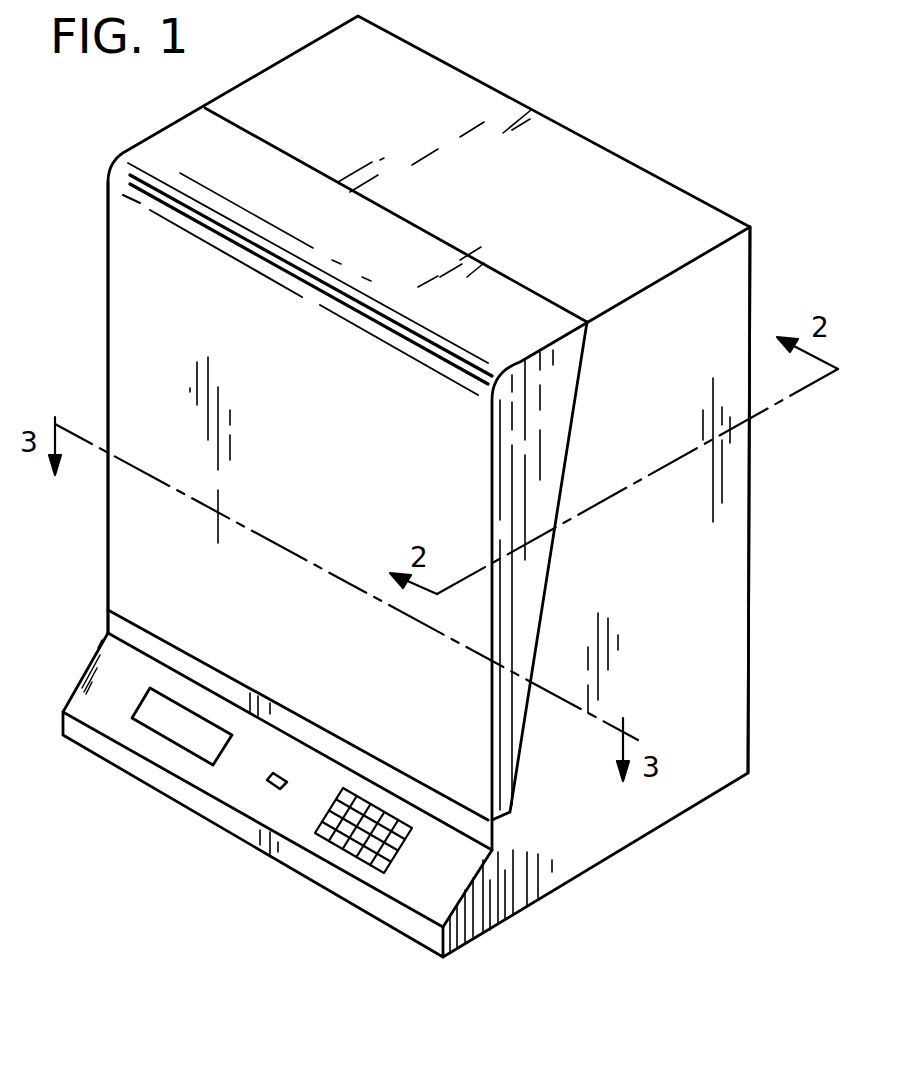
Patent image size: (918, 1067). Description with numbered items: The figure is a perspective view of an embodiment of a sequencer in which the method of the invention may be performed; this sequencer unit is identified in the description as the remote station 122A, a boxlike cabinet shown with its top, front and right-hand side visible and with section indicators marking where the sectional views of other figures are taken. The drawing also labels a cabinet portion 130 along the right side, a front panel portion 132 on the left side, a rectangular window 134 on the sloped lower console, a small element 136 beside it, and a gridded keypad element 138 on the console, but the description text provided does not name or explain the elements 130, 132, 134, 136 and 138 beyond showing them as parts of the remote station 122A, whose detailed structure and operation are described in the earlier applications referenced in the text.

The remote station 122A is at (558, 42).
The cabinet housing 130 is at (724, 697).
The front door panel 132 is at (122, 292).
The display window 134 is at (160, 717).
The coin slot / button 136 is at (272, 784).
The keypad 138 is at (362, 818).